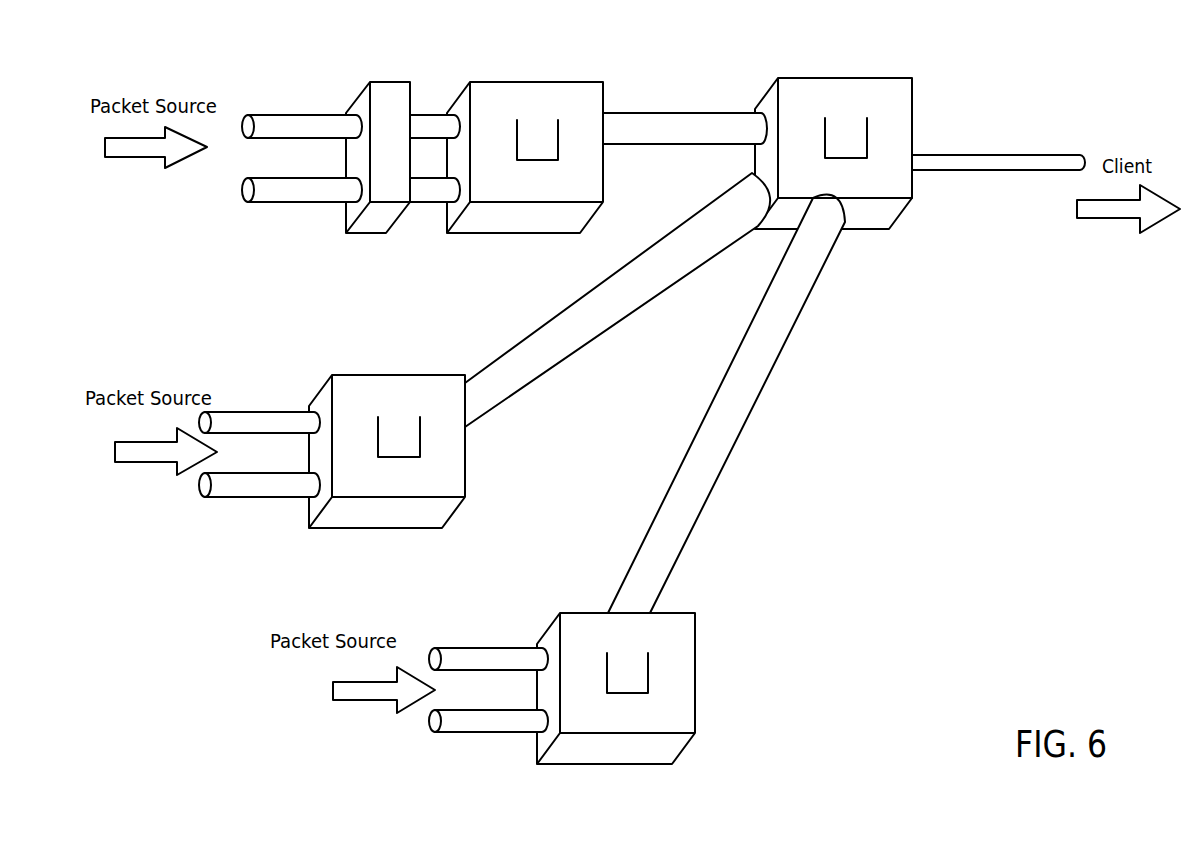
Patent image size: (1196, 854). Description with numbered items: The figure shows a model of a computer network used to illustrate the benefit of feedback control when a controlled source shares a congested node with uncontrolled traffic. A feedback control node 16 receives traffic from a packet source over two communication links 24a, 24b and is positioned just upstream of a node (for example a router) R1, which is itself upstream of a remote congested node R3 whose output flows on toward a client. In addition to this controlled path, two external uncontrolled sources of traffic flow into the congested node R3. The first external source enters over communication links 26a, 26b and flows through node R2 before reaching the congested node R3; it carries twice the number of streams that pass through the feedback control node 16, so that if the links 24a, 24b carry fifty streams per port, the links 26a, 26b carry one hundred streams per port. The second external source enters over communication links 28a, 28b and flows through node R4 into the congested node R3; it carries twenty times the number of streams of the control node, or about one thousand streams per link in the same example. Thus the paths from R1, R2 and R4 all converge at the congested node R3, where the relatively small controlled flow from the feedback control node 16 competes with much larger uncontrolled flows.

The feedback control node 16 is at (386, 82).
The communication link 24a is at (302, 113).
The communication link 24b is at (302, 201).
The communication link 26a is at (259, 410).
The communication link 26b is at (259, 497).
The communication link 28a is at (488, 648).
The communication link 28b is at (488, 732).
The node R1 is at (538, 86).
The node R2 is at (381, 378).
The congested node R3 is at (838, 85).
The node R4 is at (586, 613).